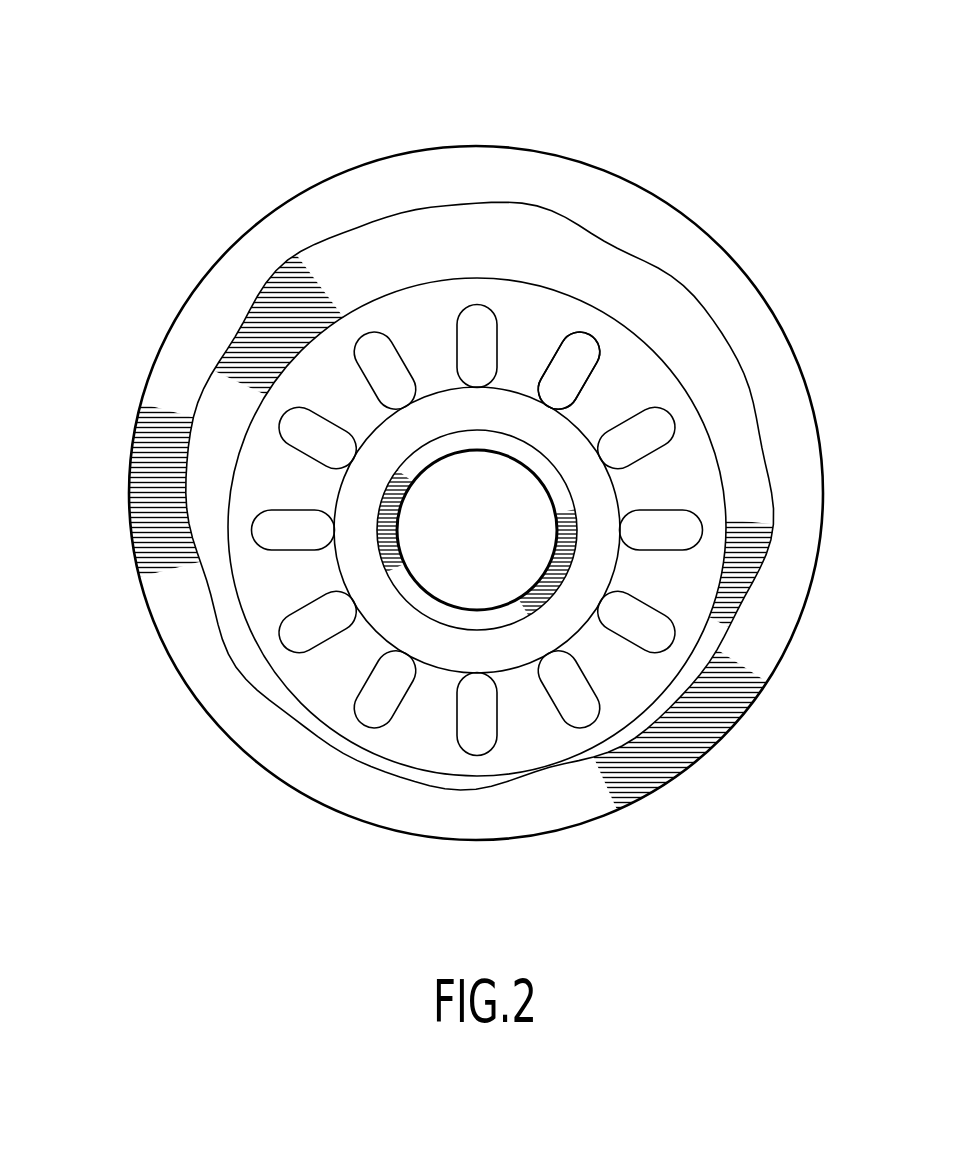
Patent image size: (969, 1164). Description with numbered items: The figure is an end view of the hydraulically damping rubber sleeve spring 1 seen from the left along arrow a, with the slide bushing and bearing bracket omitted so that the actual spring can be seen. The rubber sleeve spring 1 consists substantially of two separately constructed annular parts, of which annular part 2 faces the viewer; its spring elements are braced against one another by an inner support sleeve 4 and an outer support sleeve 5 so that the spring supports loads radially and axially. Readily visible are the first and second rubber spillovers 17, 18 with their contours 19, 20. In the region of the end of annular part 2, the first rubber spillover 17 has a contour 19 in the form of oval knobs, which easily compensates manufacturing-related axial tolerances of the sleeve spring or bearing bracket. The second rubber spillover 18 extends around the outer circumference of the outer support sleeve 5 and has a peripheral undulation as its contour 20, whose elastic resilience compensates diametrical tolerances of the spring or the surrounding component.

The rubber sleeve spring 1 is at (188, 813).
The annular part 2 is at (833, 450).
The first rubber spillover 17 is at (432, 343).
The second rubber spillover 18 is at (622, 240).
The contour 19 is at (567, 367).
The contour 20 is at (665, 263).
The inner support sleeve 4 is at (473, 128).
The outer support sleeve 5 is at (138, 377).